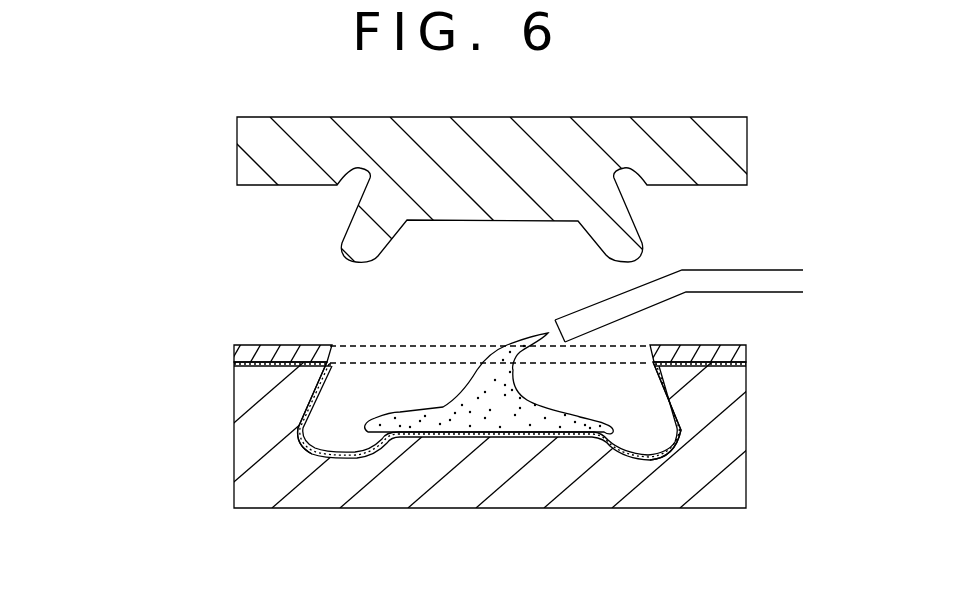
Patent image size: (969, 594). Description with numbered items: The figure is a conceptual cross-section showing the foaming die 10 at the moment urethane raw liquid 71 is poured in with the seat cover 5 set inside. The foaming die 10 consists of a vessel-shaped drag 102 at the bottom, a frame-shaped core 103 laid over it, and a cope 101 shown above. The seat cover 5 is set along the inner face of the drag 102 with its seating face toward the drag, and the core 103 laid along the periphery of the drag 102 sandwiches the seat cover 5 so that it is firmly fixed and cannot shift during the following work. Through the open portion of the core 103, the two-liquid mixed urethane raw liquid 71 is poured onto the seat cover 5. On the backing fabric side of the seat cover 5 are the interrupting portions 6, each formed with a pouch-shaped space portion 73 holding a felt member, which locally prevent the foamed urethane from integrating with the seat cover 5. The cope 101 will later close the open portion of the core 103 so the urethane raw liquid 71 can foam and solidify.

The foaming die 10 is at (96, 233).
The cope 101 is at (258, 186).
The drag 102 is at (265, 410).
The core 103 is at (235, 350).
The seat cover 5 is at (448, 437).
The interrupting portion 6 is at (308, 441).
The urethane raw liquid 71 is at (512, 347).
The space portion 73 is at (330, 457).